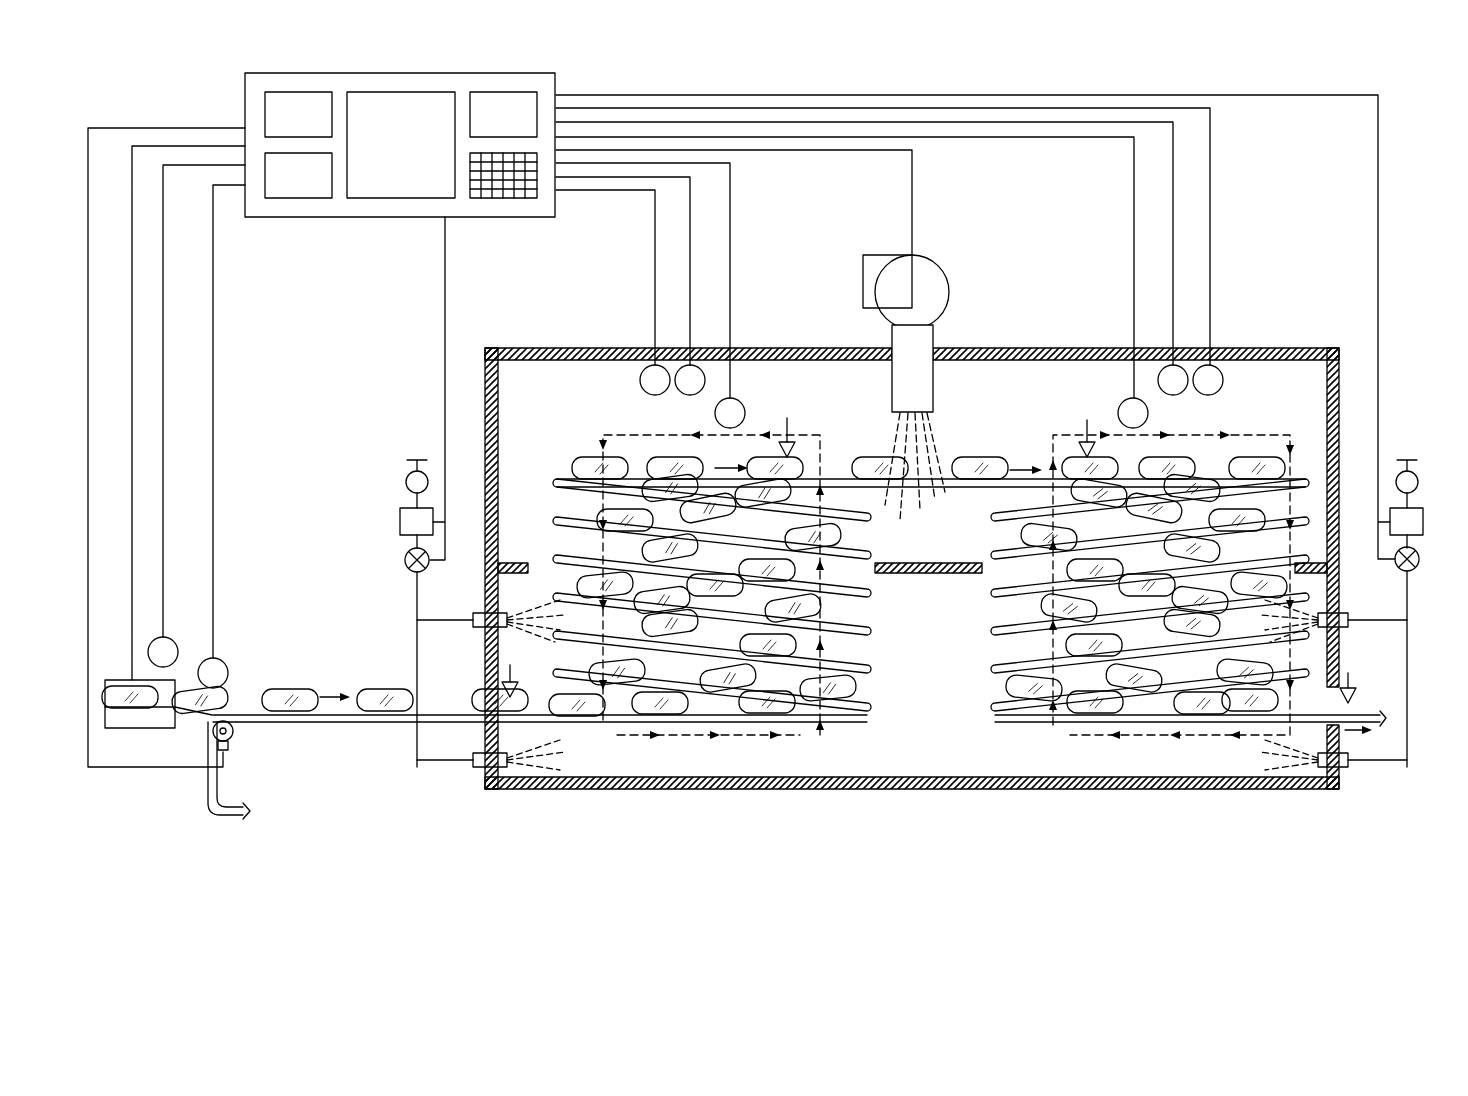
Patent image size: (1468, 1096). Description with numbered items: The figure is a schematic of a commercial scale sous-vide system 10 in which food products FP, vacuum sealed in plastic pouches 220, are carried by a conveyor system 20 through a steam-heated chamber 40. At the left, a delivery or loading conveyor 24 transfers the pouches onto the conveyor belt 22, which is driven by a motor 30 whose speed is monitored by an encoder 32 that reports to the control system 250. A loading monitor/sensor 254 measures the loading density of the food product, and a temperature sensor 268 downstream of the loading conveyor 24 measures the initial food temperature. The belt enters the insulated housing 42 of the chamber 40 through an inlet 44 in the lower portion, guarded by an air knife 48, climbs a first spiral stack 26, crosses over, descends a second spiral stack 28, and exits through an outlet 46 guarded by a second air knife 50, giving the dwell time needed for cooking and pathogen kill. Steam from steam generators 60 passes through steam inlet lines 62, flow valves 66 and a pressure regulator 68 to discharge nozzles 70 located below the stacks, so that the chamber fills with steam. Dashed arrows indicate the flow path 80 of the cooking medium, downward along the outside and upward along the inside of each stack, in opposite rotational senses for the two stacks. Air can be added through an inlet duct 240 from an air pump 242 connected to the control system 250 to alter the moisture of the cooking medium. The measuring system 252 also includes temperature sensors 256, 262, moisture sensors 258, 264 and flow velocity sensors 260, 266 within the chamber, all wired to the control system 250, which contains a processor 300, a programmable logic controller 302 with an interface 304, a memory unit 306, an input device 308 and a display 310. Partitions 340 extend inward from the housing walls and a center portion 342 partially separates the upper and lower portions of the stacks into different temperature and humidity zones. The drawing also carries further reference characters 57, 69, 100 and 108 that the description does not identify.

The sous-vide system 10 is at (1405, 96).
The conveyor system 20 is at (346, 729).
The conveyor belt 22 is at (208, 804).
The delivery or loading conveyor 24 is at (132, 728).
The first spiral stack 26 is at (567, 470).
The second spiral stack 28 is at (1323, 512).
The motor 30 is at (233, 740).
The encoder 32 is at (225, 751).
The chamber 40 is at (684, 792).
The insulated housing 42 is at (1342, 384).
The inlet 44 is at (490, 688).
The outlet 46 is at (1358, 718).
The air knife 48 is at (513, 674).
The second air knife 50 is at (773, 425).
The nozzle 57 is at (1326, 612).
The steam generator 60 is at (400, 520).
The steam inlet line 62 is at (408, 484).
The flow valve 66 is at (410, 462).
The pressure regulator 68 is at (405, 562).
The nozzle 69 is at (473, 624).
The discharge nozzle 70 is at (494, 770).
The flow path 80 is at (1110, 810).
The housing 100 is at (930, 571).
The air flow 108 is at (1084, 434).
The pouch or container 220 is at (374, 698).
The food product FP is at (690, 682).
The inlet duct 240 is at (938, 320).
The air pump 242 is at (875, 260).
The control system 250 is at (452, 58).
The measuring system 252 is at (400, 72).
The loading monitor/sensor 254 is at (175, 638).
The temperature sensor 256 is at (643, 384).
The moisture sensor 258 is at (684, 394).
The flow velocity sensor 260 is at (740, 410).
The temperature sensor 262 is at (1222, 384).
The moisture sensor 264 is at (1182, 394).
The flow velocity sensor 266 is at (1125, 408).
The temperature sensor 268 is at (228, 660).
The processor 300 is at (245, 78).
The programmable logic controller 302 is at (414, 198).
The interface 304 is at (300, 198).
The memory unit 306 is at (265, 115).
The keyboard or input device 308 is at (485, 198).
The display or output device 310 is at (537, 92).
The partition 340 is at (508, 563).
The center portion 342 is at (917, 563).